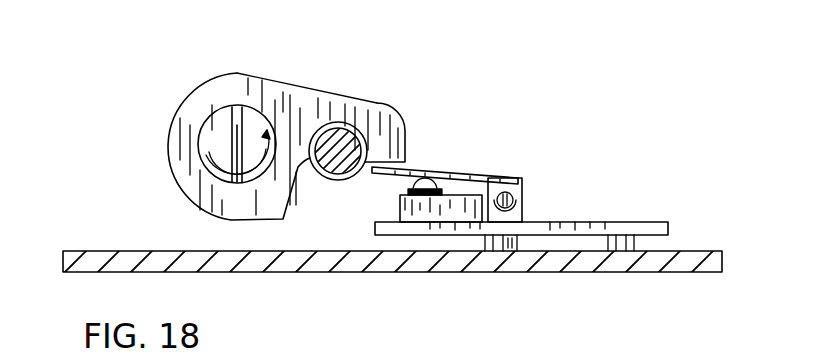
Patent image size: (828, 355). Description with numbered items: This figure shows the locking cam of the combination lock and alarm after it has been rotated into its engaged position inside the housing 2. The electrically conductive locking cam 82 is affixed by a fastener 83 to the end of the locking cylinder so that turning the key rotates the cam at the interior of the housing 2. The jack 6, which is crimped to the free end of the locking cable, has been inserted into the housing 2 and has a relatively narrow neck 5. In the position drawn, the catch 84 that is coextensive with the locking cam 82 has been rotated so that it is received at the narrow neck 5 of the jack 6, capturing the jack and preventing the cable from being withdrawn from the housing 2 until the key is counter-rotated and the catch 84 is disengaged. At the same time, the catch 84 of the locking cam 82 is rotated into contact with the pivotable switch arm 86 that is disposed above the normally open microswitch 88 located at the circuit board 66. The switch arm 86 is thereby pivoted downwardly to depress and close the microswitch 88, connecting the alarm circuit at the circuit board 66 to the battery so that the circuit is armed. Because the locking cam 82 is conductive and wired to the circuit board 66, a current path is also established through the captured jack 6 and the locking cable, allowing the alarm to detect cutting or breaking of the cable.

The housing 2 is at (330, 262).
The neck area 5 is at (336, 132).
The jack 6 is at (347, 182).
The circuit board 66 is at (532, 227).
The locking cam 82 is at (220, 98).
The fastener 83 is at (220, 148).
The catch 84 is at (387, 125).
The switch arm 86 is at (462, 172).
The microswitch 88 is at (425, 172).